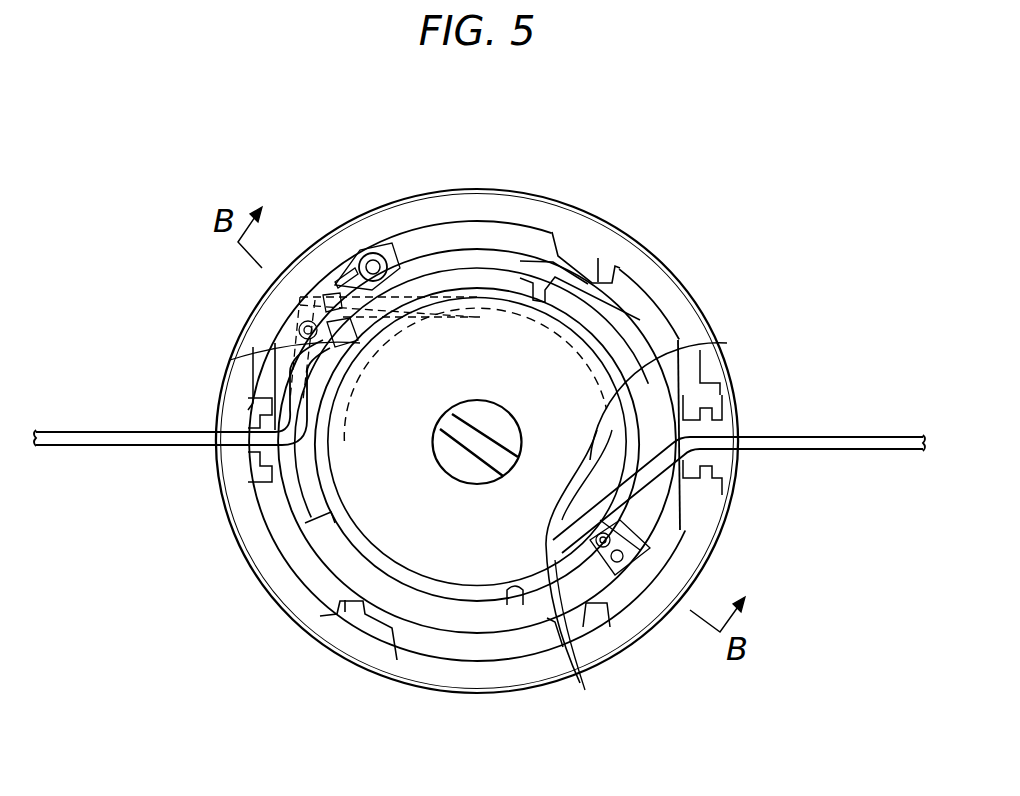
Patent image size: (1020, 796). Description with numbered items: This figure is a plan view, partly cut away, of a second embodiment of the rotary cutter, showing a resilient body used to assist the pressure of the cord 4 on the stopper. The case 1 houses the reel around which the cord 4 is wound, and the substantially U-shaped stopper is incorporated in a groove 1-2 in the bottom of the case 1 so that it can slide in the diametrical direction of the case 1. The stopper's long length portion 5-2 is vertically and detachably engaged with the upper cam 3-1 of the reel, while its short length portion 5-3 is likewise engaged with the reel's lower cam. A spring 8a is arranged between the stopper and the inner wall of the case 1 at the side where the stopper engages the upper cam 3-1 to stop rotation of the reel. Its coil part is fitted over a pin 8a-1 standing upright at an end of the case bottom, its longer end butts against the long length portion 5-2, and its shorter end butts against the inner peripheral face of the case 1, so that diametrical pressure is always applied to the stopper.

The case 1 is at (607, 222).
The groove 1-2 is at (600, 572).
The upper cam 3-1 is at (428, 272).
The cord 4 is at (152, 447).
The long length portion 5-2 is at (322, 347).
The short length portion 5-3 is at (643, 532).
The spring 8a is at (358, 250).
The pin 8a-1 is at (388, 255).